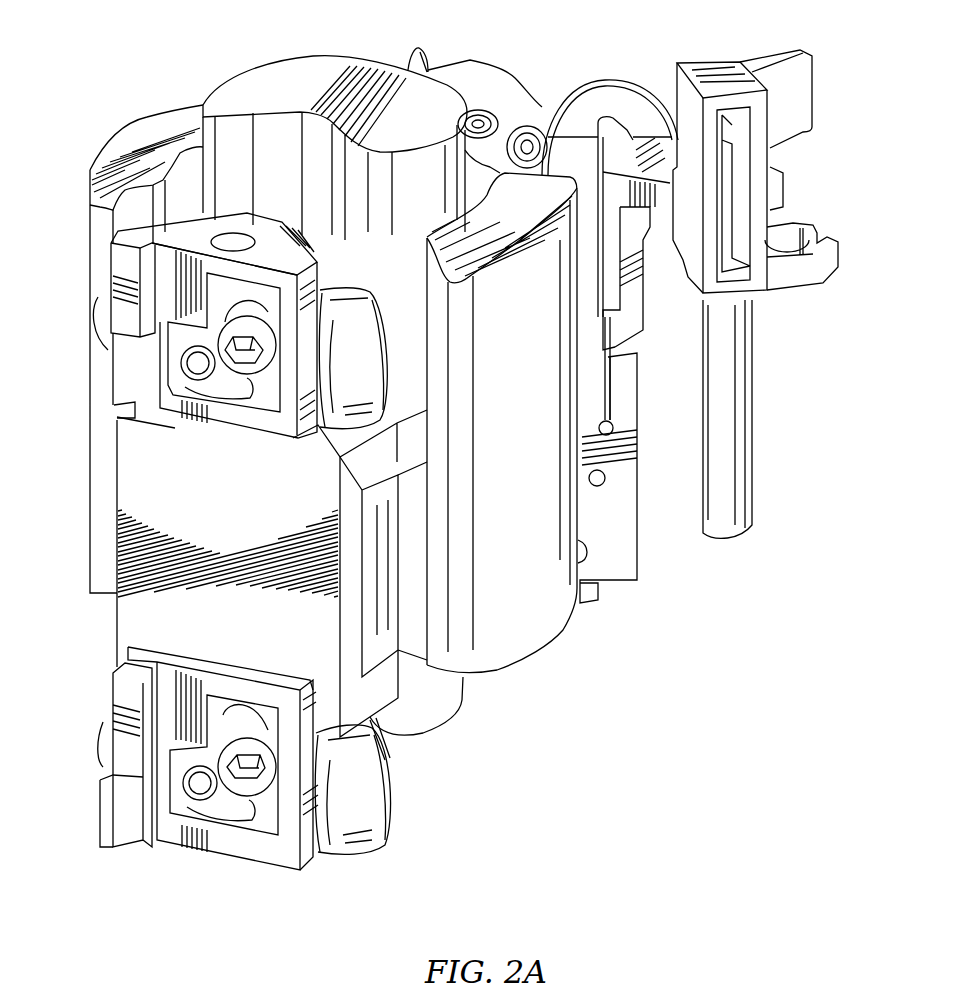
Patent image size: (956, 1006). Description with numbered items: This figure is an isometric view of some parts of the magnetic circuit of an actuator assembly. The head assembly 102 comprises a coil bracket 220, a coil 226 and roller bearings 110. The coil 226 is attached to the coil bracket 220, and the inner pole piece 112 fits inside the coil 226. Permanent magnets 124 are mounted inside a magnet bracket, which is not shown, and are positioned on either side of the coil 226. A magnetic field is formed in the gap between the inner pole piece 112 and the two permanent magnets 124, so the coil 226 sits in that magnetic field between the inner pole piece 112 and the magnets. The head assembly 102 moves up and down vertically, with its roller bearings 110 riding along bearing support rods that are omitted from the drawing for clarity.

The head assembly 102 is at (107, 461).
The roller bearings 110 is at (353, 288).
The inner pole piece 112 is at (268, 72).
The permanent magnets 124 is at (155, 133).
The coil bracket 220 is at (238, 498).
The coil 226 is at (405, 540).